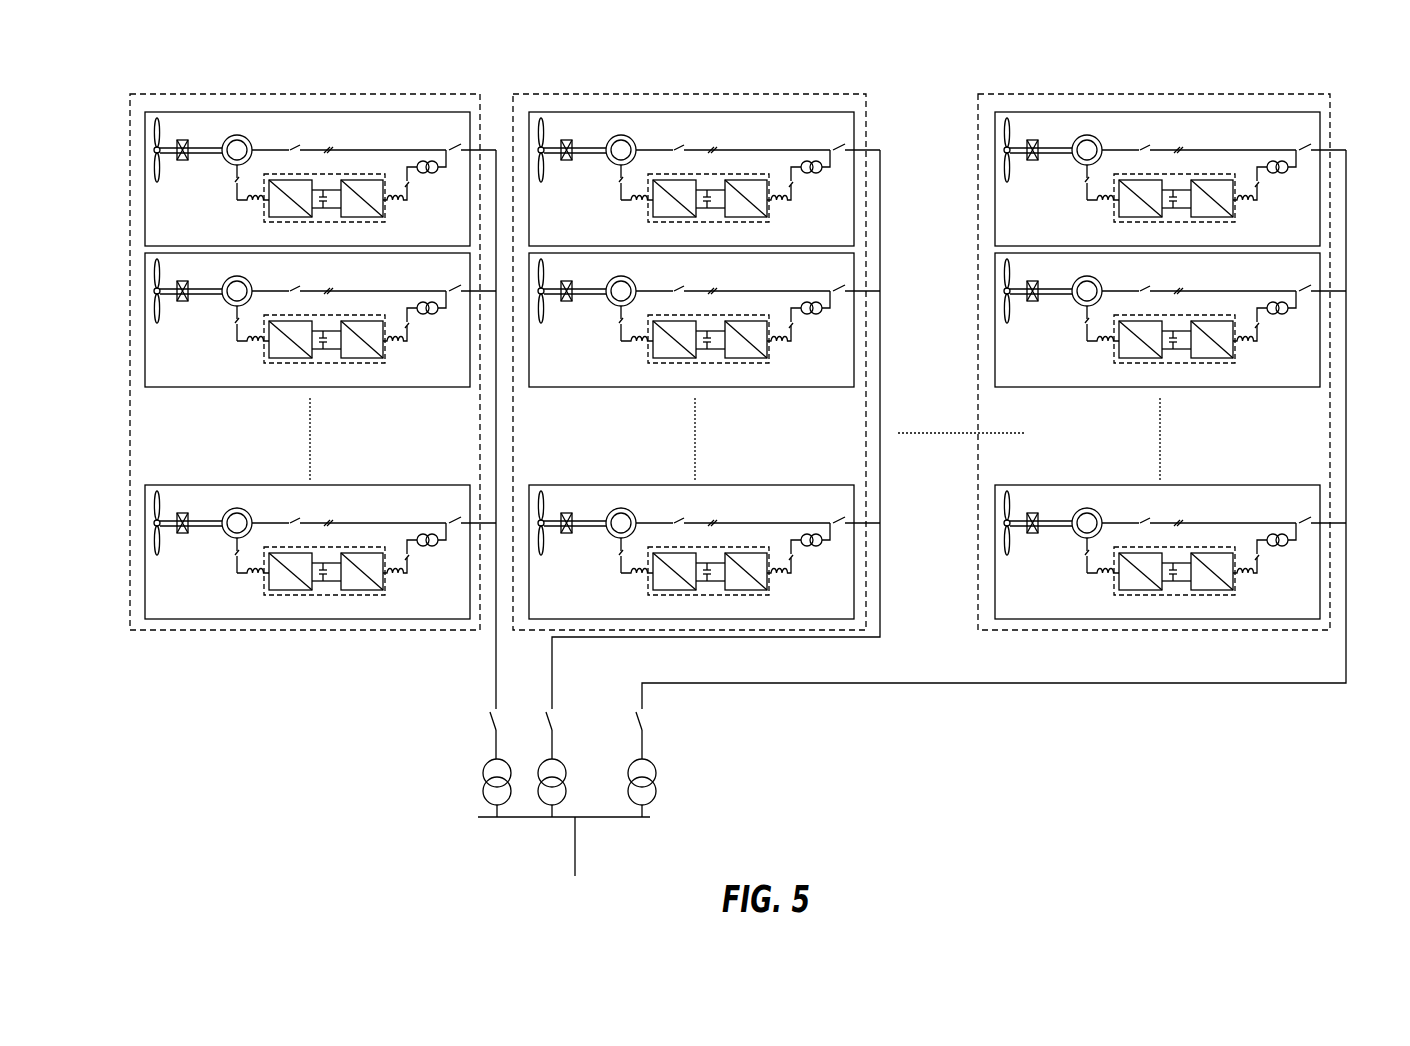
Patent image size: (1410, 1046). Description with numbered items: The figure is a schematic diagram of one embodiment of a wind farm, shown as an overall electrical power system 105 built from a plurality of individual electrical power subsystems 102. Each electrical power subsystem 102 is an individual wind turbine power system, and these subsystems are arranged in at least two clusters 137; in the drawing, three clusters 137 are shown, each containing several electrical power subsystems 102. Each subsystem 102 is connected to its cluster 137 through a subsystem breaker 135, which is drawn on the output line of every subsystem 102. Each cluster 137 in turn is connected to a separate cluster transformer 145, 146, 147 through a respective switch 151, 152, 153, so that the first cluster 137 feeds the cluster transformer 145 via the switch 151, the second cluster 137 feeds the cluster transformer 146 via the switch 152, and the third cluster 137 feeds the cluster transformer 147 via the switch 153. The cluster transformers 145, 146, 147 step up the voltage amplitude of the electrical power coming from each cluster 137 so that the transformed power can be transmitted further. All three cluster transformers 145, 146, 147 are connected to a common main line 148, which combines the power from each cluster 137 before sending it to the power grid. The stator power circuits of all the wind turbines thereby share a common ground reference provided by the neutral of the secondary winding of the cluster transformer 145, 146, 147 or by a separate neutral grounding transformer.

The electrical power subsystem 102 is at (145, 197).
The electrical power system 105 is at (1357, 188).
The subsystem breaker 135 is at (457, 146).
The cluster 137 is at (128, 270).
The cluster transformer 145 is at (482, 772).
The cluster transformer 146 is at (561, 762).
The cluster transformer 147 is at (654, 762).
The main line 148 is at (520, 820).
The switch 151 is at (480, 712).
The switch 152 is at (542, 713).
The switch 153 is at (632, 720).